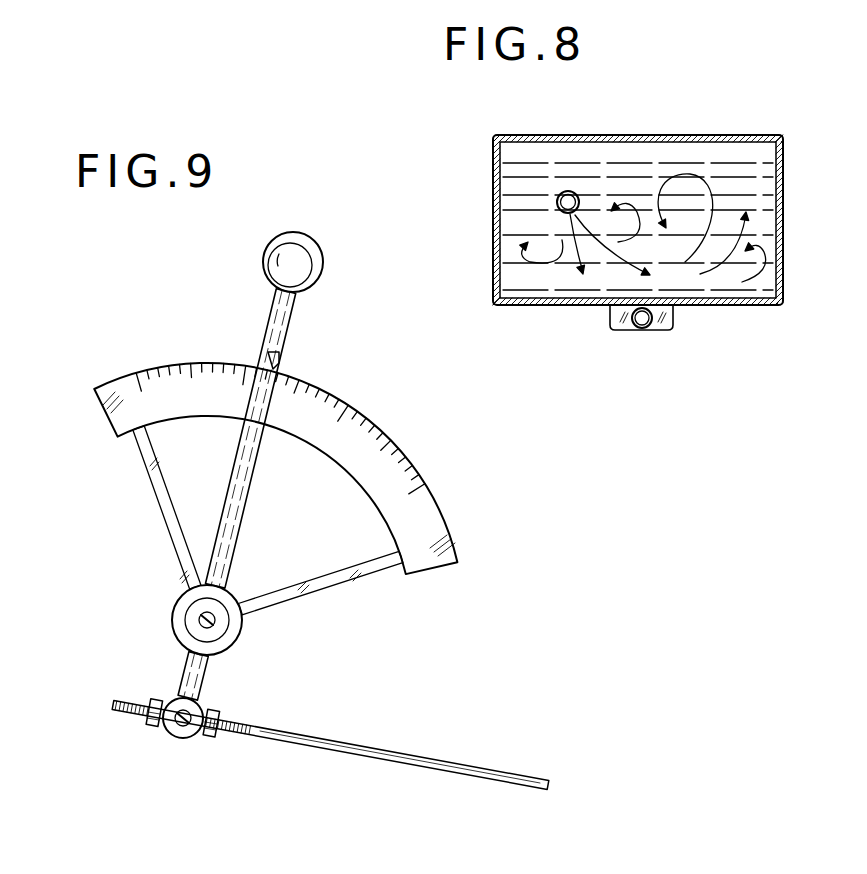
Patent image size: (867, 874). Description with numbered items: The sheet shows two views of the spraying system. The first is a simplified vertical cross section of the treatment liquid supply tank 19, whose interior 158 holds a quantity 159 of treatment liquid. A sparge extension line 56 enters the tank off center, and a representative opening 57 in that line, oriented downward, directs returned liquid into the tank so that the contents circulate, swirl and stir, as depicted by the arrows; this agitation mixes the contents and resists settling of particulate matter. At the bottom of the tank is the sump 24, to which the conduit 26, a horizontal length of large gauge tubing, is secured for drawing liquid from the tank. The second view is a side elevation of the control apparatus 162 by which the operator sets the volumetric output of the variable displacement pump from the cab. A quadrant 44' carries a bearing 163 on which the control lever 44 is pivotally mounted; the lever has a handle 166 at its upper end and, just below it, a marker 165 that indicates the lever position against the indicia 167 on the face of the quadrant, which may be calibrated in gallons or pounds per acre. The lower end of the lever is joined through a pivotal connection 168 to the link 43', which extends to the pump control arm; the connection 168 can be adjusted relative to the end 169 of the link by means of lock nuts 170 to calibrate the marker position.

In FIG. 8, the tank 19 is at (676, 136).
In FIG. 8, the sump 24 is at (613, 310).
In FIG. 8, the conduit 26 is at (670, 318).
In FIG. 8, the sparge extension line 56 is at (557, 197).
In FIG. 8, the opening 57 is at (560, 213).
In FIG. 8, the interior 158 is at (512, 162).
In FIG. 8, the quantity of treatment liquid 159 is at (597, 178).
In FIG. 9, the link 43' is at (330, 742).
In FIG. 9, the control lever 44 is at (270, 494).
In FIG. 9, the quadrant 44' is at (310, 468).
In FIG. 9, the control apparatus 162 is at (163, 543).
In FIG. 9, the bearing 163 is at (180, 600).
In FIG. 9, the marker 165 is at (274, 360).
In FIG. 9, the handle 166 is at (274, 273).
In FIG. 9, the indicia 167 is at (378, 432).
In FIG. 9, the pivotal connection 168 is at (188, 735).
In FIG. 9, the end of link 169 is at (132, 717).
In FIG. 9, the lock nuts 170 is at (213, 715).